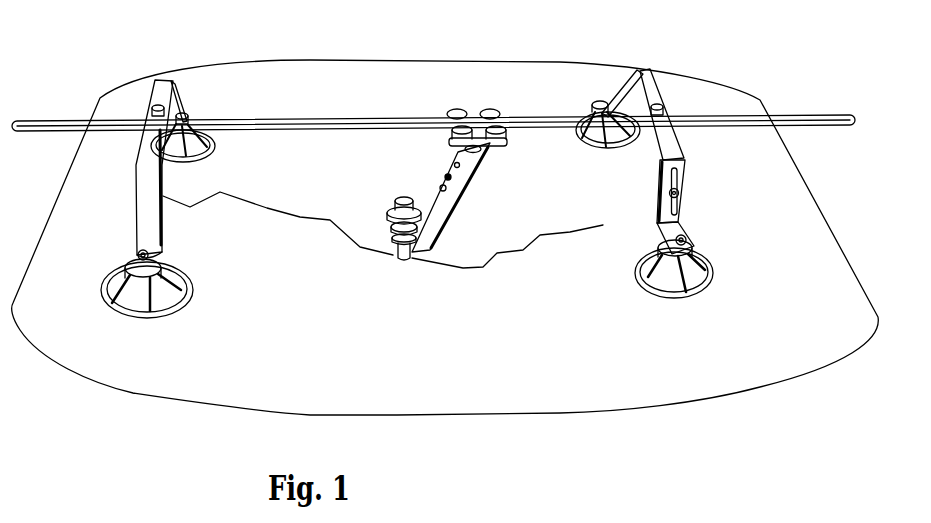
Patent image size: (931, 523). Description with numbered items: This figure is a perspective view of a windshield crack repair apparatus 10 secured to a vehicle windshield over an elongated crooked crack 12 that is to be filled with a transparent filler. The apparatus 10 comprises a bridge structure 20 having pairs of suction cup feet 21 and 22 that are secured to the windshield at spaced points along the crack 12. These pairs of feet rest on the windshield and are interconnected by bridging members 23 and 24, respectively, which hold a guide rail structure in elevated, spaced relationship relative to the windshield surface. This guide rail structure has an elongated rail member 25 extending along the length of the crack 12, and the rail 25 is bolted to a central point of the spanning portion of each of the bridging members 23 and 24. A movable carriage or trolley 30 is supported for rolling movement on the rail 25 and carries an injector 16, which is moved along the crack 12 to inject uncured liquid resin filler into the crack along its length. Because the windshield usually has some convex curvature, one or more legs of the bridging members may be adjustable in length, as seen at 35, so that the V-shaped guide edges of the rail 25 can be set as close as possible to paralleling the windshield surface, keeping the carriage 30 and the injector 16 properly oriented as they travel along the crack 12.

The apparatus 10 is at (320, 105).
The crack 12 is at (539, 237).
The injector 16 is at (390, 200).
The bridge structure 20 is at (697, 156).
The suction cup feet 21 is at (213, 150).
The suction cup feet 22 is at (587, 110).
The bridging member 23 is at (145, 175).
The bridging member 24 is at (678, 210).
The rail member 25 is at (202, 128).
The carriage 30 is at (504, 152).
The adjustable leg 35 is at (668, 193).